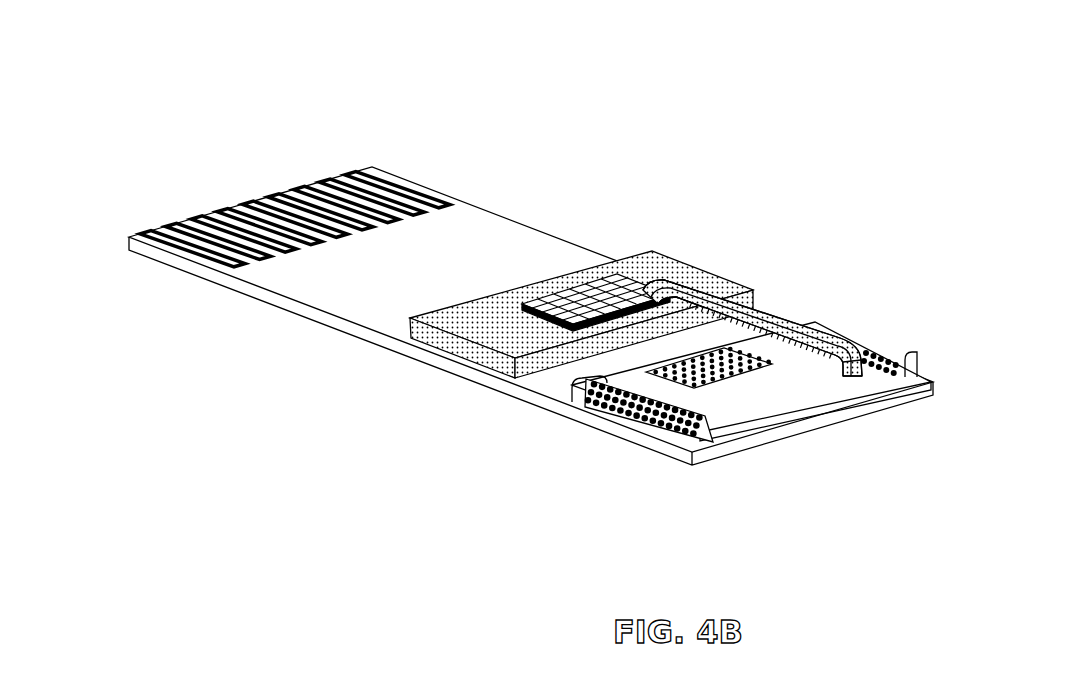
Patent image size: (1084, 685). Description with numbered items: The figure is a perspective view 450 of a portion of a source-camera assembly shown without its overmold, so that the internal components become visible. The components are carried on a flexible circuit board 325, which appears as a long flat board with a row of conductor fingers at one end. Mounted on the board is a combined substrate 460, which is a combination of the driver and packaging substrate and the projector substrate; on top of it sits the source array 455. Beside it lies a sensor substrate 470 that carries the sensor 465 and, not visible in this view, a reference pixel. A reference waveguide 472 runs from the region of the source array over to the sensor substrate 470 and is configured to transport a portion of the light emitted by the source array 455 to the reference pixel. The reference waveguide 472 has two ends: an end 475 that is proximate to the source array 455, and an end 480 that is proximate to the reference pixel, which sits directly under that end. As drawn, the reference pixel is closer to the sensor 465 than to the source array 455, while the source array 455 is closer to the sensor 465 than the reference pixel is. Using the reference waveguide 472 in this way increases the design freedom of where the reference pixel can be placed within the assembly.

The perspective view 450 is at (45, 40).
The flexible circuit board 325 is at (253, 287).
The source array 455 is at (580, 312).
The combined substrate 460 is at (482, 325).
The sensor 465 is at (658, 410).
The sensor substrate 470 is at (778, 397).
The reference waveguide 472 is at (775, 328).
The end 475 is at (639, 282).
The end 480 is at (846, 378).